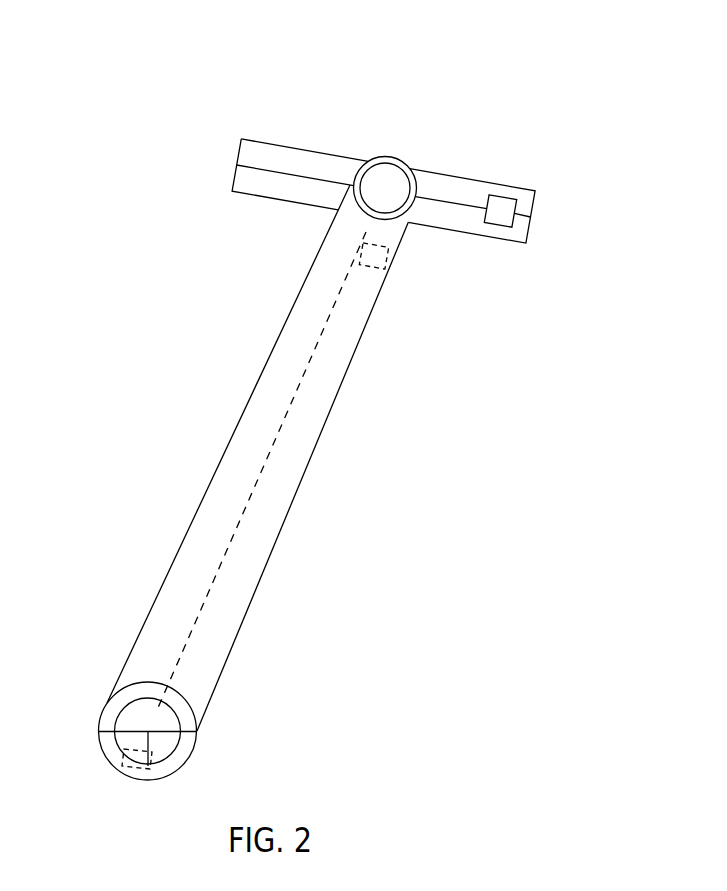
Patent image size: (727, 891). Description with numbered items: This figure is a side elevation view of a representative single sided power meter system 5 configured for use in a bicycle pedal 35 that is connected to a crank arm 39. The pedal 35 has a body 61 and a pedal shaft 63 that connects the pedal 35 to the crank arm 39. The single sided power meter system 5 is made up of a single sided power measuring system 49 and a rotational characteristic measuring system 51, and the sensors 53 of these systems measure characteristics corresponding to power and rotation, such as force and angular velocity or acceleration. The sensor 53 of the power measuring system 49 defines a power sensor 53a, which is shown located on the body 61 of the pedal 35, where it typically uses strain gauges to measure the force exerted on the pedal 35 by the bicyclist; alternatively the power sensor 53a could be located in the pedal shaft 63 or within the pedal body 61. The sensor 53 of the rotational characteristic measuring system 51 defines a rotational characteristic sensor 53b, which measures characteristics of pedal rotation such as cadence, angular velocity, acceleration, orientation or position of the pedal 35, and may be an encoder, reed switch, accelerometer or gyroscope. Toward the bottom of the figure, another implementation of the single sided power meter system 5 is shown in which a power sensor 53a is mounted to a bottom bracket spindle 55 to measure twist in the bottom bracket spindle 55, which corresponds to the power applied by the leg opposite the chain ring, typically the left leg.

The single sided power meter system 5 is at (213, 38).
The bicycle pedal 35 is at (267, 172).
The pedal body 61 is at (486, 173).
The pedal shaft 63 is at (373, 202).
The sensor 53 is at (401, 262).
The power sensor 53a is at (528, 222).
The rotational characteristic sensor 53b is at (377, 292).
The crank arm 39 is at (232, 453).
The rotational characteristic measuring system 51 is at (412, 339).
The single sided power measuring system 49 is at (561, 372).
The bottom bracket spindle 55 is at (143, 721).